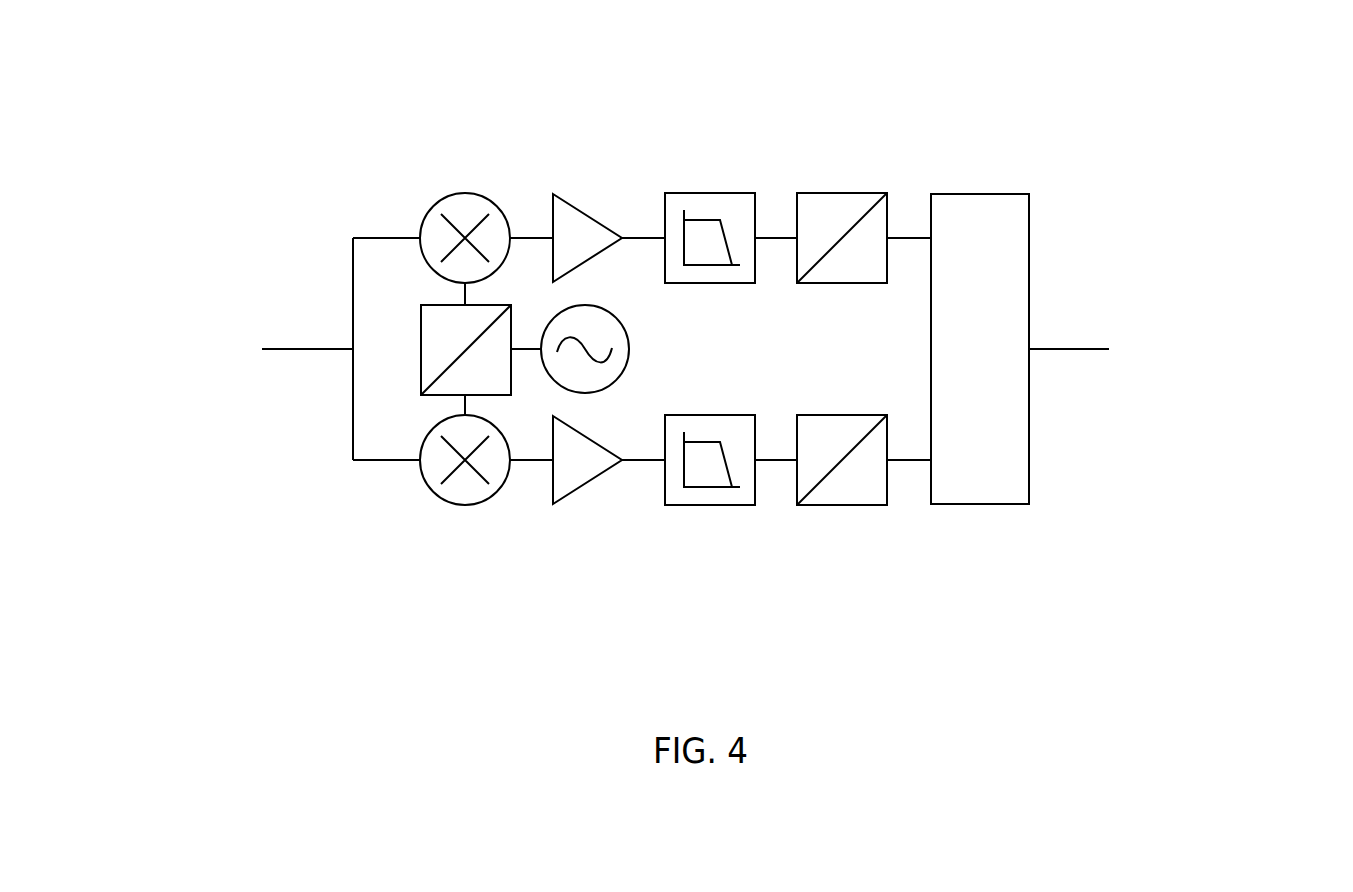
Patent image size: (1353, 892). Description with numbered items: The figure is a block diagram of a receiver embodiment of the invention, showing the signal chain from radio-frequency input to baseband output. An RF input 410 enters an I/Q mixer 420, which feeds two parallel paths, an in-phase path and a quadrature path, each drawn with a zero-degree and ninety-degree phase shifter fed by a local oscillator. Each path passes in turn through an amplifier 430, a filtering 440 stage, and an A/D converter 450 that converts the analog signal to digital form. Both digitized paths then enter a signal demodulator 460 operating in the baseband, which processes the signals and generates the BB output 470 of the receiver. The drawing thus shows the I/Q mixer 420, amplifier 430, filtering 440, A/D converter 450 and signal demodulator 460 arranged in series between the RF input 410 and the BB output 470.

The RF input 410 is at (249, 353).
The I/Q mixer 420 is at (462, 193).
The amplifier 430 is at (575, 204).
The filtering 440 is at (707, 193).
The A/D converter 450 is at (828, 193).
The signal demodulator 460 is at (958, 349).
The BB output 470 is at (1148, 343).